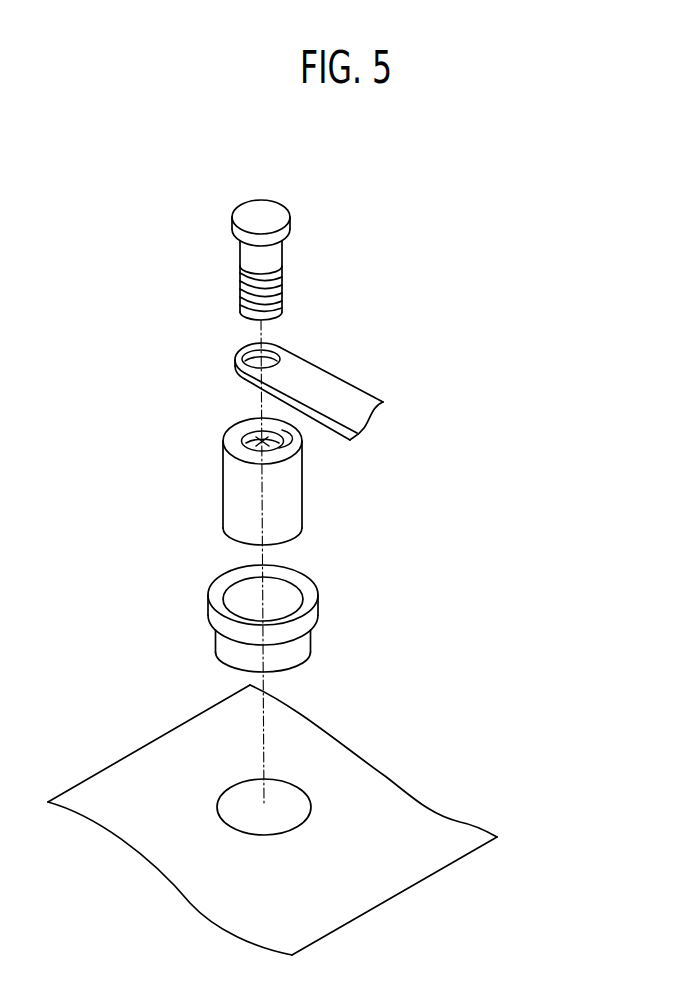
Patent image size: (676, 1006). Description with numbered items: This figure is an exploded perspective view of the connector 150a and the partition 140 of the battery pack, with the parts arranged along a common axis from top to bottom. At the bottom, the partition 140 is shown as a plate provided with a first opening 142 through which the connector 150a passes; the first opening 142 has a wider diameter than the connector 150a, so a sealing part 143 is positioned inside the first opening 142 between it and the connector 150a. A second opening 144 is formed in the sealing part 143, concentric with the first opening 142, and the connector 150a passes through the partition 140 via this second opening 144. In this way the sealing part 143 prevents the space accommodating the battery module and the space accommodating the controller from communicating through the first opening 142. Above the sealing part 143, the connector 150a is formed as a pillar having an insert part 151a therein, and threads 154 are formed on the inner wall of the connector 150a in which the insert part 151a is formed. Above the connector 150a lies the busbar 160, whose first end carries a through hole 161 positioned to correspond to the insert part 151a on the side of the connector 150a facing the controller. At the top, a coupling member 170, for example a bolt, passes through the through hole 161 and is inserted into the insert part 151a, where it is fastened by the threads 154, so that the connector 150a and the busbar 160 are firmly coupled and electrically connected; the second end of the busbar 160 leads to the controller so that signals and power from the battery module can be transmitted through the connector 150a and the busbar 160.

The coupling member 170 is at (280, 188).
The busbar 160 is at (322, 360).
The through hole 161 is at (249, 366).
The connector 150a is at (208, 487).
The threads 154 is at (258, 433).
The insert part 151a is at (280, 438).
The sealing part 143 is at (198, 623).
The second opening 144 is at (292, 597).
The partition 140 is at (431, 834).
The first opening 142 is at (290, 808).